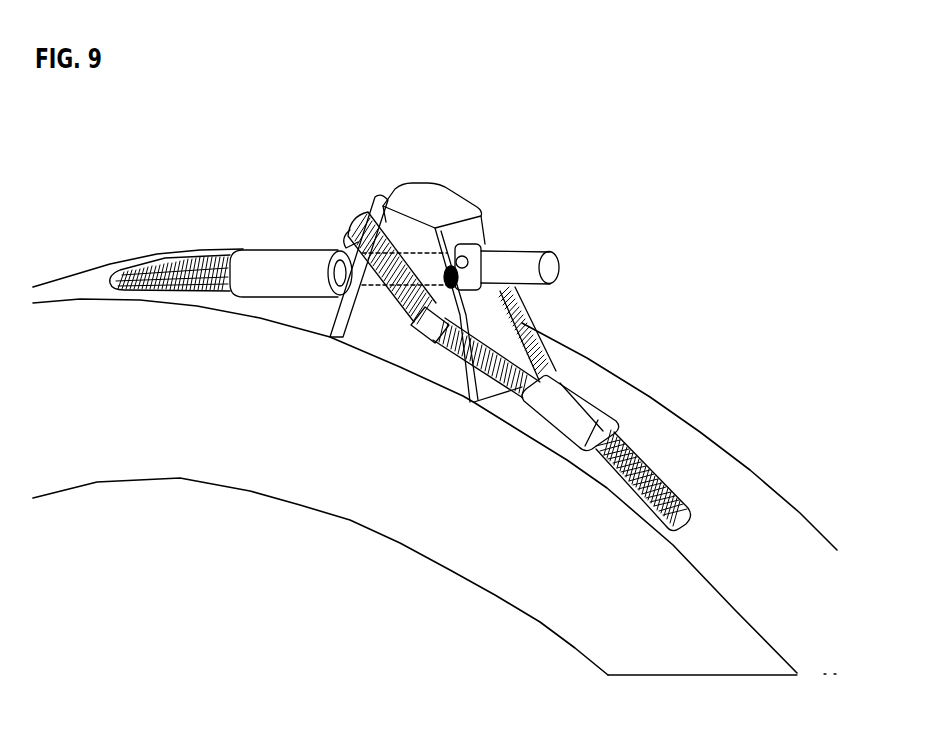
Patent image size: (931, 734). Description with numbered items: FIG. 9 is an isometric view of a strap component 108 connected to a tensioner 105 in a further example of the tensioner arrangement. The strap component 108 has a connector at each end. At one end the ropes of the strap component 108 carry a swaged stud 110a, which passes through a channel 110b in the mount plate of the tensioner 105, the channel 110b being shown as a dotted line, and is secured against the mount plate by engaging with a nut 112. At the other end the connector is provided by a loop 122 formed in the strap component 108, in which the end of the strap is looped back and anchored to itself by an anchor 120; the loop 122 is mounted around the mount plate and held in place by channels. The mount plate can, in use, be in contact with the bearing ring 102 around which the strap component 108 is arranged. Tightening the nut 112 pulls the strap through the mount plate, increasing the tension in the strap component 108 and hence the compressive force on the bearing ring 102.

The bearing ring 102 is at (526, 526).
The tensioner 105 is at (451, 201).
The strap component 108 is at (199, 253).
The swaged stud 110a is at (287, 252).
The channel 110b is at (399, 249).
The nut 112 is at (505, 238).
The anchor 120 is at (586, 389).
The loop 122 is at (388, 312).